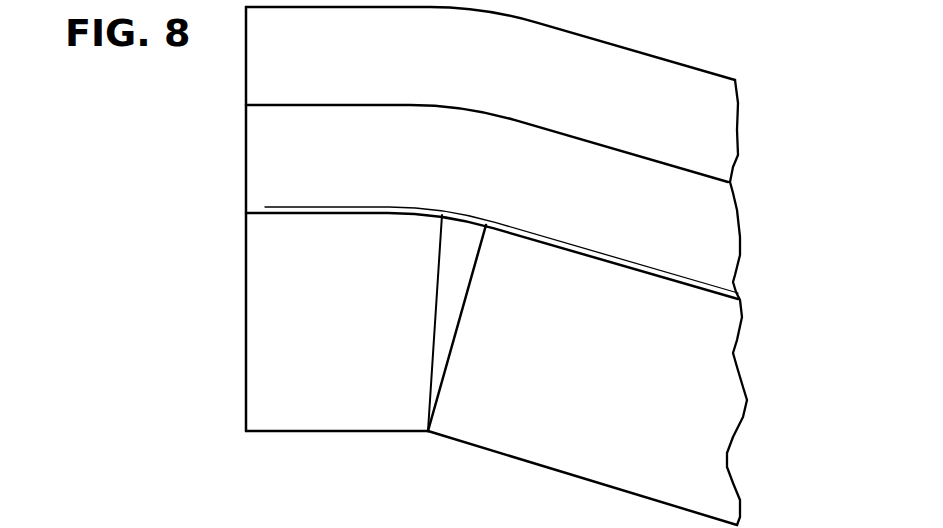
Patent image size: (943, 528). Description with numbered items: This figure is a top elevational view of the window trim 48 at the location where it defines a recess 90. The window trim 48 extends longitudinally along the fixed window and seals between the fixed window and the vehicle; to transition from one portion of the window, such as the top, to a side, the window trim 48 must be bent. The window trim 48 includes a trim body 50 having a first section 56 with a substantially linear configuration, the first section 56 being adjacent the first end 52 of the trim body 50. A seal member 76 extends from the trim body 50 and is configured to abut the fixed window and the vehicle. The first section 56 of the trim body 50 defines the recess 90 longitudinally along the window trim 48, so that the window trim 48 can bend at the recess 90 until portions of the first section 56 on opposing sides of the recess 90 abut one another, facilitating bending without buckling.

The window trim 48 is at (696, 40).
The trim body 50 is at (246, 250).
The first end 52 is at (332, 431).
The first section 56 is at (705, 387).
The seal member 76 is at (588, 172).
The recess 90 is at (476, 289).